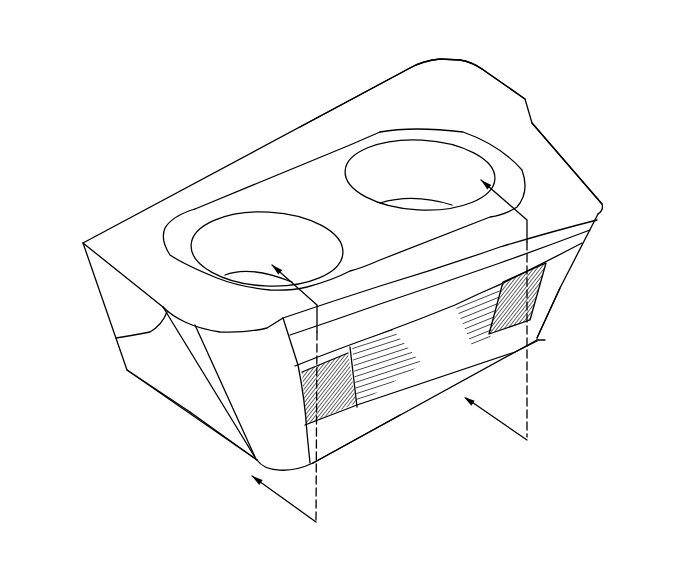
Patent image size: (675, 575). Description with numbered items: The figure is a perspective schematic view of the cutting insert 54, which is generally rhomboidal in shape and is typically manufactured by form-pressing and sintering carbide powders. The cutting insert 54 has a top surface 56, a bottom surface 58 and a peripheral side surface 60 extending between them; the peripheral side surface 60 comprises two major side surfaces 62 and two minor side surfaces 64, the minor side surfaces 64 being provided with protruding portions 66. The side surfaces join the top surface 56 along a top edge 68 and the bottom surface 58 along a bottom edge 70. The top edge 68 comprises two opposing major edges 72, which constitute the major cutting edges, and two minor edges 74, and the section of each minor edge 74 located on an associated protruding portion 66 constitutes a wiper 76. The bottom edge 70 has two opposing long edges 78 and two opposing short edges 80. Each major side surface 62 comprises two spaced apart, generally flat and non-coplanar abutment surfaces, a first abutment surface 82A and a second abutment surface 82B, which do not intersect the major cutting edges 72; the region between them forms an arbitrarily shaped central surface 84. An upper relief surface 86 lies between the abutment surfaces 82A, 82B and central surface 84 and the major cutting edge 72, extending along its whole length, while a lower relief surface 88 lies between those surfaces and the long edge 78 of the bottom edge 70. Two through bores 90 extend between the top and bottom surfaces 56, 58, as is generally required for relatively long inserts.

The cutting insert 54 is at (127, 83).
The top surface 56 is at (312, 122).
The bottom surface 58 is at (398, 430).
The peripheral side surface 60 is at (147, 357).
The major side surface 62 is at (416, 405).
The minor side surface 64 is at (190, 403).
The protruding portion 66 is at (544, 64).
The top edge 68 is at (333, 98).
The bottom edge 70 is at (155, 401).
The major edge 72 is at (263, 148).
The minor edge 74 is at (580, 164).
The wiper 76 is at (487, 72).
The long edge 78 is at (512, 352).
The short edge 80 is at (200, 427).
The first abutment surface 82A is at (540, 286).
The second abutment surface 82B is at (338, 410).
The central surface 84 is at (430, 337).
The upper relief surface 86 is at (578, 235).
The lower relief surface 88 is at (370, 417).
The through bore 90 is at (207, 248).